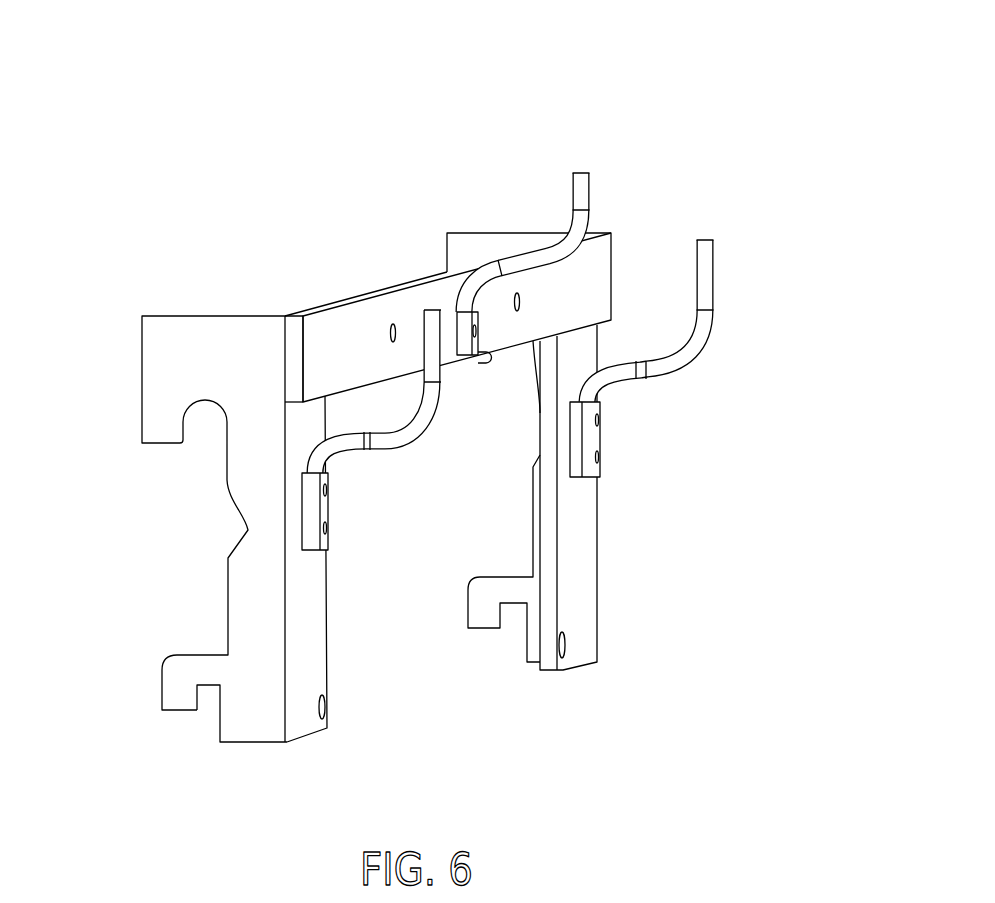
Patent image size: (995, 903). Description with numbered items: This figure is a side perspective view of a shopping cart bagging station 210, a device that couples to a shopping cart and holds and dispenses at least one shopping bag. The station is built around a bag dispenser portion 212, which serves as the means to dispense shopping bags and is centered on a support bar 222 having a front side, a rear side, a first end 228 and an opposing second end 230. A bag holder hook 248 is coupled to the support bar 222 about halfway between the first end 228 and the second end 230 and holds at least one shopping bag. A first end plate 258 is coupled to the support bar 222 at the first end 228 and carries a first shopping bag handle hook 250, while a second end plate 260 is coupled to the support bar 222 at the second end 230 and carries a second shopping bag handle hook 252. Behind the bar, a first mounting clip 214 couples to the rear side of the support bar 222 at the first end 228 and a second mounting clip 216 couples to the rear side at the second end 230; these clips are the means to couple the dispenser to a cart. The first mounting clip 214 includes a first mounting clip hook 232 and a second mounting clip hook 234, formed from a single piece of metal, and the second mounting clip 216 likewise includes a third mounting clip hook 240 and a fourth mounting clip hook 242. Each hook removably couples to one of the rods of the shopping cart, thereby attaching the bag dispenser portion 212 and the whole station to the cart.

The shopping cart bagging station 210 is at (410, 415).
The bag dispenser portion 212 is at (410, 478).
The first mounting clip 214 is at (158, 580).
The second mounting clip 216 is at (448, 363).
The support bar 222 is at (505, 327).
The first end 228 is at (297, 298).
The second end 230 is at (550, 227).
The first mounting clip hook 232 is at (168, 363).
The second mounting clip hook 234 is at (177, 693).
The third mounting clip hook 240 is at (472, 363).
The fourth mounting clip hook 242 is at (482, 612).
The bag holder hook 248 is at (582, 192).
The first shopping bag handle hook 250 is at (432, 362).
The second shopping bag handle hook 252 is at (705, 274).
The first end plate 258 is at (307, 680).
The second end plate 260 is at (573, 612).